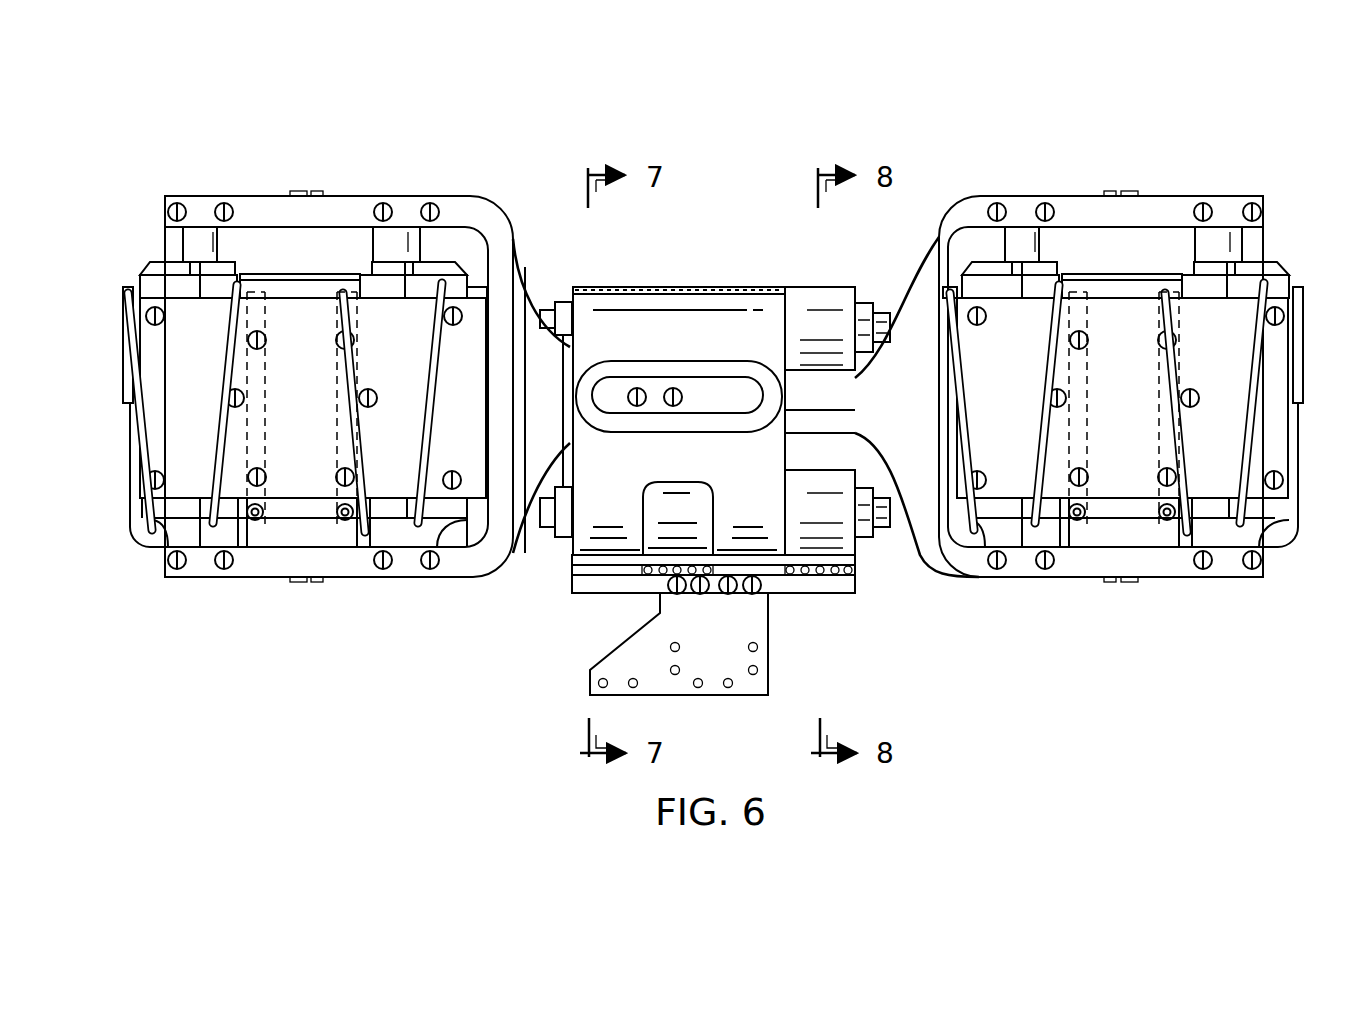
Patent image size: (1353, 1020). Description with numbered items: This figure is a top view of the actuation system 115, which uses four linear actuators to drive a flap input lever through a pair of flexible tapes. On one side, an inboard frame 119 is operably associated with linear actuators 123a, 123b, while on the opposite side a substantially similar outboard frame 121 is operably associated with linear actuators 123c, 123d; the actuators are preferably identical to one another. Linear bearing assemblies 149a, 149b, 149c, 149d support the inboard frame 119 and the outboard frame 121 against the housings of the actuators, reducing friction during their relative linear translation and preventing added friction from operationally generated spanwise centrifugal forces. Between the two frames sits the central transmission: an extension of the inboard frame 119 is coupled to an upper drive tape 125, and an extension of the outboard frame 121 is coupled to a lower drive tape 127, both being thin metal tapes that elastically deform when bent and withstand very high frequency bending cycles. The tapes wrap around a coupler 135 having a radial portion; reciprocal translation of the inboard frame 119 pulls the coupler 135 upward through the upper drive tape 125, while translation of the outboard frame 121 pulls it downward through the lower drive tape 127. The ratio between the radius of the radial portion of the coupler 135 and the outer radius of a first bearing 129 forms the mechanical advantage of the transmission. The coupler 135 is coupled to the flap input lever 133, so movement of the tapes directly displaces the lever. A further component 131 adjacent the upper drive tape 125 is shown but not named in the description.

The actuation system 115 is at (545, 147).
The inboard frame 119 is at (260, 195).
The outboard frame 121 is at (1164, 195).
The linear actuator 123a is at (158, 260).
The linear actuator 123b is at (380, 260).
The linear actuator 123c is at (1047, 260).
The linear actuator 123d is at (1267, 260).
The upper drive tape 125 is at (800, 287).
The lower drive tape 127 is at (850, 470).
The first bearing 129 is at (866, 545).
The upper fastener 131 is at (863, 300).
The flap input lever 133 is at (736, 633).
The coupler 135 is at (575, 590).
The linear bearing assembly 149a is at (258, 547).
The linear bearing assembly 149b is at (347, 547).
The linear bearing assembly 149c is at (1080, 547).
The linear bearing assembly 149d is at (1169, 547).